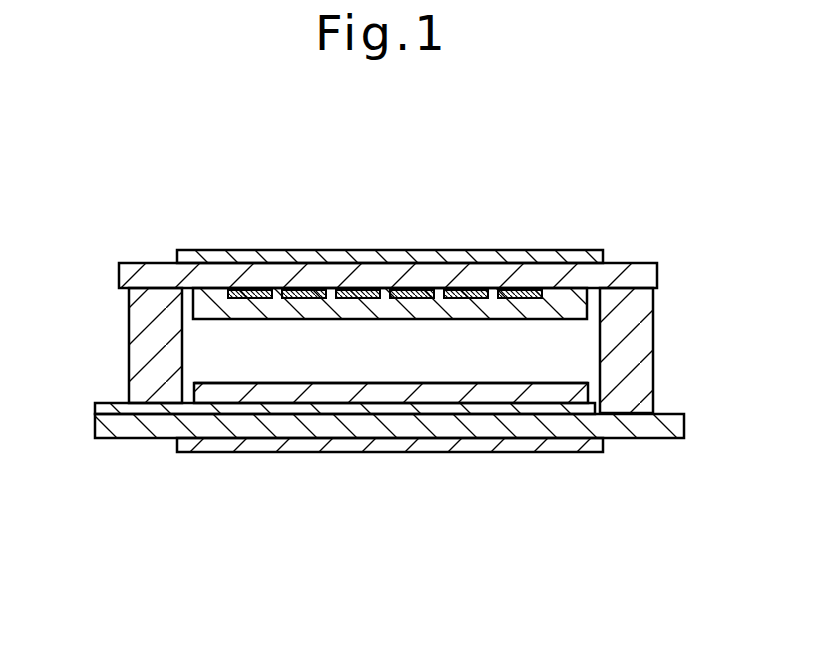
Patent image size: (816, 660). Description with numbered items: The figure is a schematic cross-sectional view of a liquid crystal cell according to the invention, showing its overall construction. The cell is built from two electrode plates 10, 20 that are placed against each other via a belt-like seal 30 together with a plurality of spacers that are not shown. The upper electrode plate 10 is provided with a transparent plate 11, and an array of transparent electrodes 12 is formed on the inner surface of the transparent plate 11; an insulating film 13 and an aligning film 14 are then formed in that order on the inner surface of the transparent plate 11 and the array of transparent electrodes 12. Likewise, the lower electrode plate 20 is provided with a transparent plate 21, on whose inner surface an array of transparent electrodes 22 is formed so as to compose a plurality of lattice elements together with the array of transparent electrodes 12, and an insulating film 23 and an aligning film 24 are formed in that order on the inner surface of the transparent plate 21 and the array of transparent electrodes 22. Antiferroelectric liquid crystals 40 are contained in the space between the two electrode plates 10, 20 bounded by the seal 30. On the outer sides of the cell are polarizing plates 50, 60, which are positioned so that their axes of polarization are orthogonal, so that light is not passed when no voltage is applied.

The electrode plate 10 is at (632, 236).
The transparent plate 11 is at (157, 273).
The transparent electrodes 12 is at (258, 296).
The insulating film 13 is at (363, 312).
The aligning film 14 is at (574, 318).
The polarizing plate 50 is at (311, 257).
The aligning film 24 is at (503, 382).
The belt-like seal 30 is at (136, 357).
The electrode plate 20 is at (670, 468).
The transparent plate 21 is at (129, 433).
The transparent electrodes 22 is at (422, 410).
The insulating film 23 is at (325, 393).
The polarizing plate 60 is at (532, 445).
The antiferroelectric liquid crystals 40 is at (248, 363).